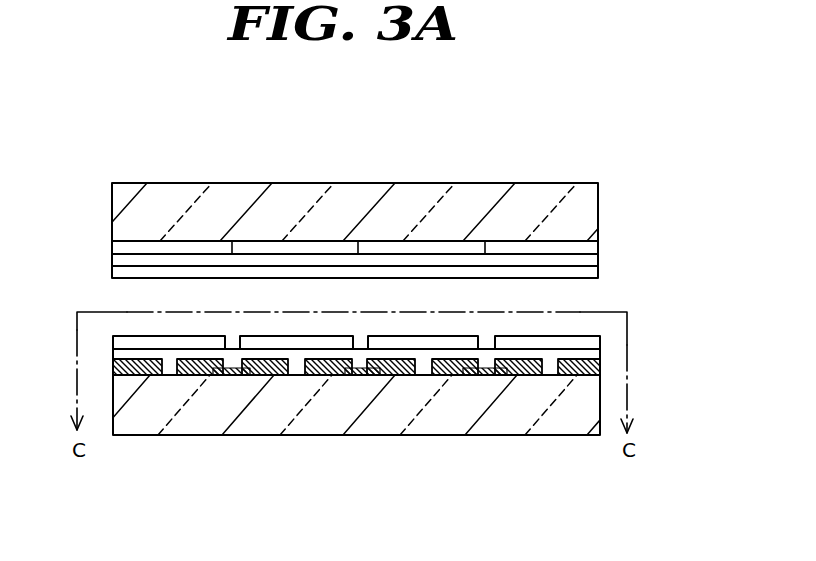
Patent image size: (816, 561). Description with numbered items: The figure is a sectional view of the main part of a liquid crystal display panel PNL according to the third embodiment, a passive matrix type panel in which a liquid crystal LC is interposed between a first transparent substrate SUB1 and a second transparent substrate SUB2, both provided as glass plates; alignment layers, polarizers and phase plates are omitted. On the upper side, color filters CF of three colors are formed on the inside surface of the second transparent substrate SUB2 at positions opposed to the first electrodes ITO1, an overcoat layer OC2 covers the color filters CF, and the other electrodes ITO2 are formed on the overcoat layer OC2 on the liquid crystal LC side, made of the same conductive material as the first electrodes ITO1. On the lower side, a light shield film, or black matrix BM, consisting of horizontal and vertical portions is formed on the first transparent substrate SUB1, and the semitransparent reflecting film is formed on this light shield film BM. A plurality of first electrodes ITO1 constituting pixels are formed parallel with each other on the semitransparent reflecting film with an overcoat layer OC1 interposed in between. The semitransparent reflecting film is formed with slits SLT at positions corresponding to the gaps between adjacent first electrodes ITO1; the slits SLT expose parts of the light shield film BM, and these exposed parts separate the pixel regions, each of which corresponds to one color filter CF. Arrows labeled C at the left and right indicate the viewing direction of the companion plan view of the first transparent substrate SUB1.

The liquid crystal display panel PNL is at (383, 297).
The second transparent substrate SUB2 is at (590, 208).
The color filters CF is at (600, 245).
The overcoat layer OC2 is at (602, 263).
The other electrodes ITO2 is at (598, 272).
The liquid crystal LC is at (127, 299).
The first electrodes ITO1 is at (600, 338).
The overcoat layer OC1 is at (600, 352).
The first transparent substrate SUB1 is at (590, 402).
The light shield film (black matrix) BM is at (354, 376).
The slits SLT is at (477, 376).